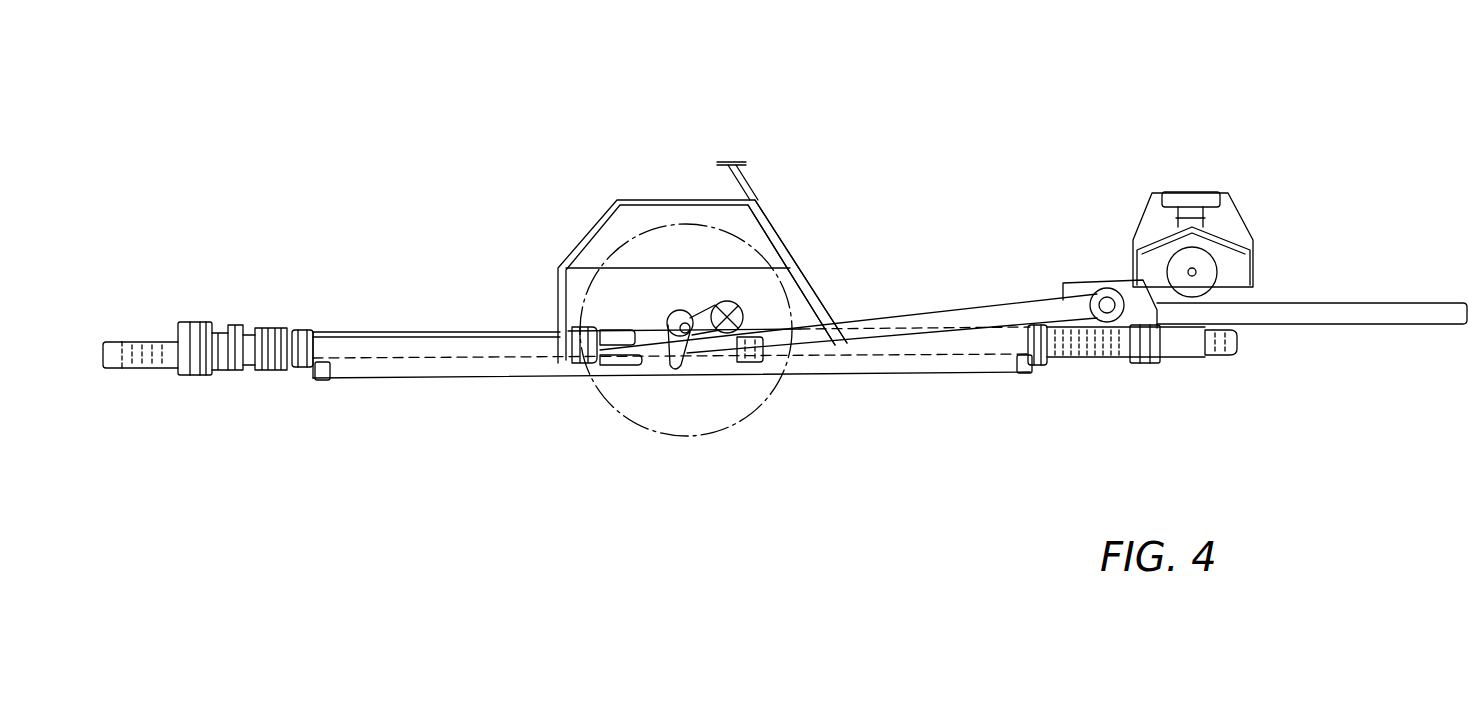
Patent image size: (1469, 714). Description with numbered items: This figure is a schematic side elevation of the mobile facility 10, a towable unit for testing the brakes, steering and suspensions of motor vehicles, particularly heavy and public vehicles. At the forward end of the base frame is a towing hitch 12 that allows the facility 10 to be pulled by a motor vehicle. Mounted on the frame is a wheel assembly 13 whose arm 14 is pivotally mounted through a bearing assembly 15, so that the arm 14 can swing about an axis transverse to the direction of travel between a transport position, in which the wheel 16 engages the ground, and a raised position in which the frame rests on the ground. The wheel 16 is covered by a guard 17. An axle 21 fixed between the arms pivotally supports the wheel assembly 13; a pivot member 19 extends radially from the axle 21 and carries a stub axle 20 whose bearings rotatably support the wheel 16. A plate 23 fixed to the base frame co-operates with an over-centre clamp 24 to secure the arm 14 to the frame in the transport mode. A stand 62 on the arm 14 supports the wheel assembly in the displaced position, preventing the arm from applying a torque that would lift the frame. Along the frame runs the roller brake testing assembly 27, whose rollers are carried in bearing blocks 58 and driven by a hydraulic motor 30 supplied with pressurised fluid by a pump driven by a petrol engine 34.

The mobile facility 10 is at (1000, 125).
The towing hitch 12 is at (1355, 303).
The wheel assembly 13 is at (677, 452).
The arm 14 is at (943, 313).
The bearing assembly 15 is at (1103, 290).
The wheel 16 is at (747, 413).
The guard 17 is at (635, 197).
The pivot member 19 is at (678, 313).
The stub axle 20 is at (683, 370).
The axle 21 is at (735, 310).
The plate 23 is at (600, 368).
The clamp 24 is at (585, 382).
The roller brake testing assembly 27 is at (425, 412).
The hydraulic motor 30 is at (190, 323).
The petrol engine 34 is at (1217, 232).
The bearing block 58 is at (298, 330).
The stand 62 is at (790, 245).